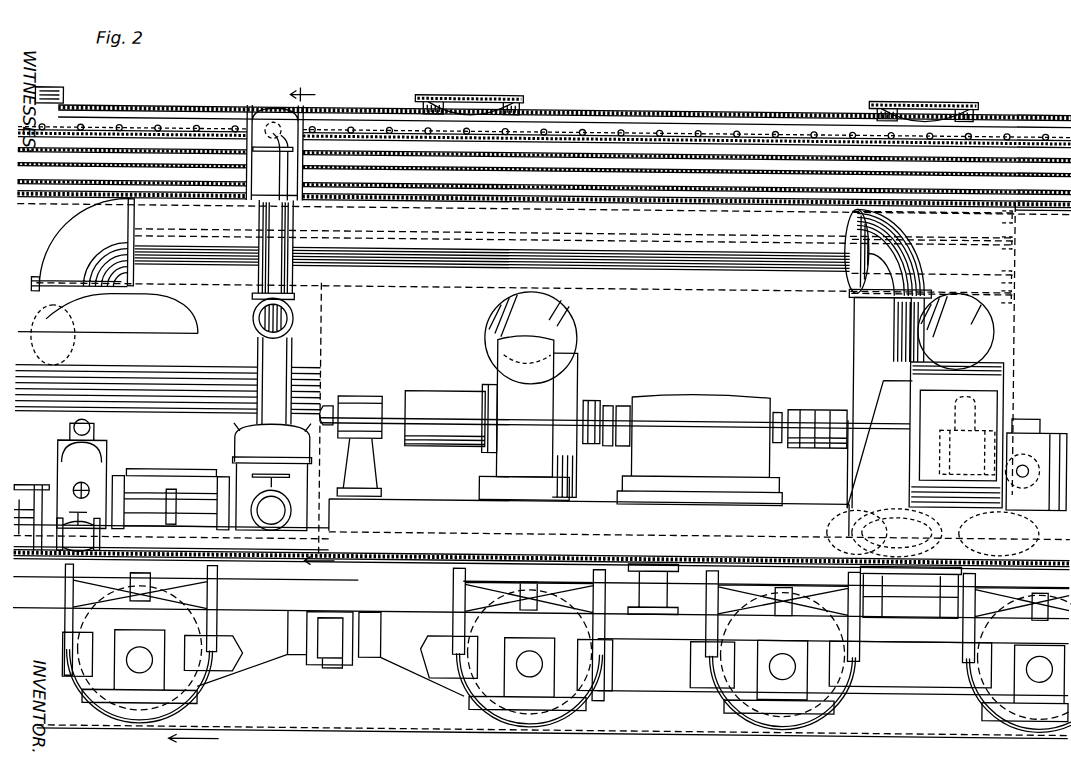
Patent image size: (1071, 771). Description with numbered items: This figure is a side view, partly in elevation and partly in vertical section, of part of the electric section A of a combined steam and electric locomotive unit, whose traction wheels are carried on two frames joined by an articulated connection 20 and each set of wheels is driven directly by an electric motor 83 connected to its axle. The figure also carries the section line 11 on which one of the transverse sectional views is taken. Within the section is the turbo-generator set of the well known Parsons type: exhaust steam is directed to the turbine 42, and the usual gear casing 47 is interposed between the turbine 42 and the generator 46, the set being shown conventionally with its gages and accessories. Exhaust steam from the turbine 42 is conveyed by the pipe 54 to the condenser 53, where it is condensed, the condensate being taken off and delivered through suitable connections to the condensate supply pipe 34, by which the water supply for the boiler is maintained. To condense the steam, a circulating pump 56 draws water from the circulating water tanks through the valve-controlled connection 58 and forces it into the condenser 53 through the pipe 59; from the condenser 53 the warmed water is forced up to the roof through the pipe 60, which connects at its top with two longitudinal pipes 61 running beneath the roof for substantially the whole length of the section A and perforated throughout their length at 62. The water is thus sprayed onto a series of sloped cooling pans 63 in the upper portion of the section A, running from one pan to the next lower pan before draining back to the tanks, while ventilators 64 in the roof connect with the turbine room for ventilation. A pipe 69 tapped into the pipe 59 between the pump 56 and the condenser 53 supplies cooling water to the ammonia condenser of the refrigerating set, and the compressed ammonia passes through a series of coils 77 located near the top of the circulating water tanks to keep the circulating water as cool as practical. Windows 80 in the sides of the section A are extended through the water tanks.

The electric section A is at (643, 113).
The section line 11— 11 is at (312, 325).
The articulated connection 20 is at (333, 669).
The condensate supply pipe 34 is at (431, 535).
The turbine 42 is at (1003, 366).
The generator 46 is at (528, 417).
The gear casing 47 is at (700, 397).
The condenser 53 is at (108, 330).
The exhaust steam pipe 54 is at (523, 249).
The circulating pump 56 is at (290, 428).
The pump-to-tank connection 58 is at (272, 477).
The condenser inlet pipe 59 is at (273, 402).
The riser pipe 60 is at (272, 161).
The longitudinal perforated pipes 61 is at (136, 122).
The perforations 62 is at (774, 131).
The cooling pans 63 is at (206, 148).
The ventilators 64 is at (512, 98).
The ammonia condenser cooling pipe 69 is at (168, 402).
The ammonia coils 77 is at (950, 279).
The windows 80 is at (739, 338).
The electric motor 83 is at (75, 695).